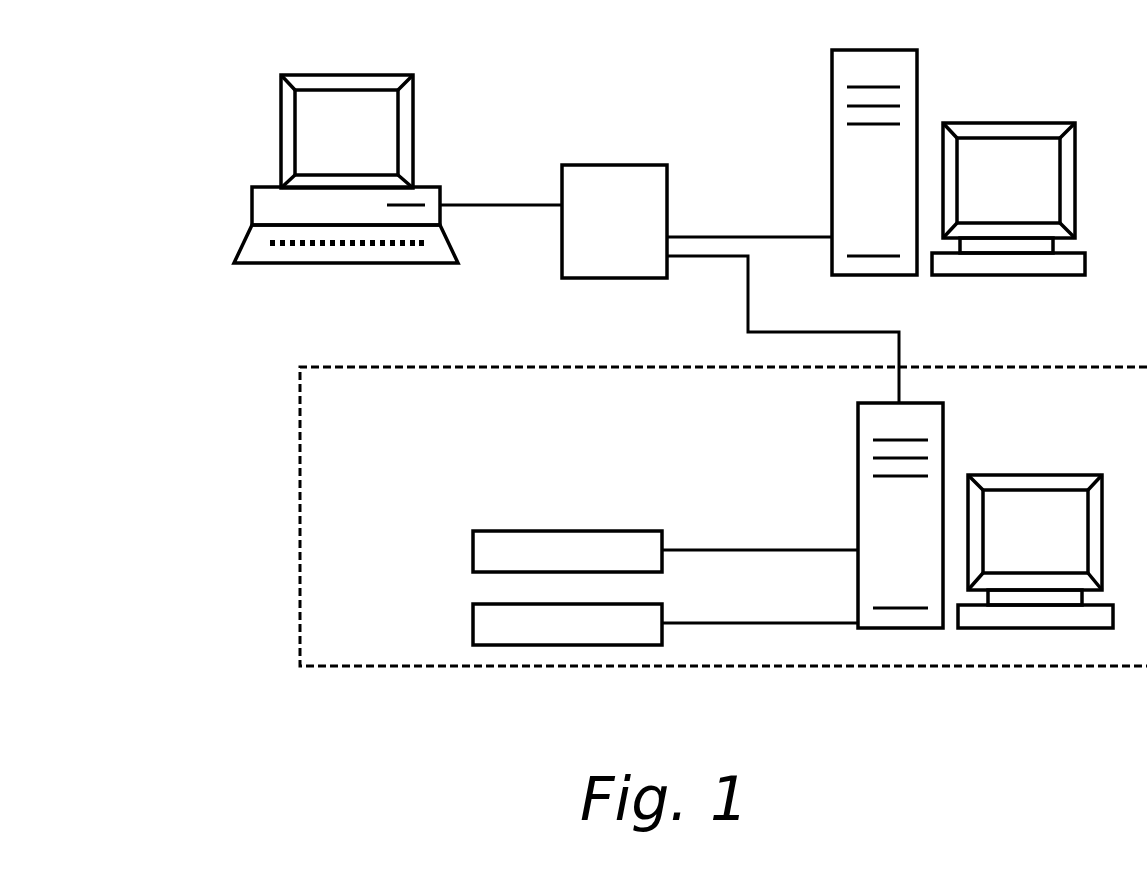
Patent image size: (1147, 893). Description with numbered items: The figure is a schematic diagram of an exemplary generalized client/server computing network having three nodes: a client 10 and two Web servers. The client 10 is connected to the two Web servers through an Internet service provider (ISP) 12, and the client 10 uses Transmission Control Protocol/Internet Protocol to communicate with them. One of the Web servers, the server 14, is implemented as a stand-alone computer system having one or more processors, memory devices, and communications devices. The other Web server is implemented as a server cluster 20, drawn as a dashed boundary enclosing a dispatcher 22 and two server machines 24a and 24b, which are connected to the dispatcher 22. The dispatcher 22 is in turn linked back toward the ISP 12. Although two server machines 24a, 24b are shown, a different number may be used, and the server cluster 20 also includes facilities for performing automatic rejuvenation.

The client 10 is at (252, 205).
The Internet service provider (ISP) 12 is at (622, 165).
The server 14 is at (917, 75).
The server cluster 20 is at (300, 420).
The dispatcher 22 is at (943, 436).
The server machine 24a is at (473, 545).
The server machine 24b is at (473, 618).